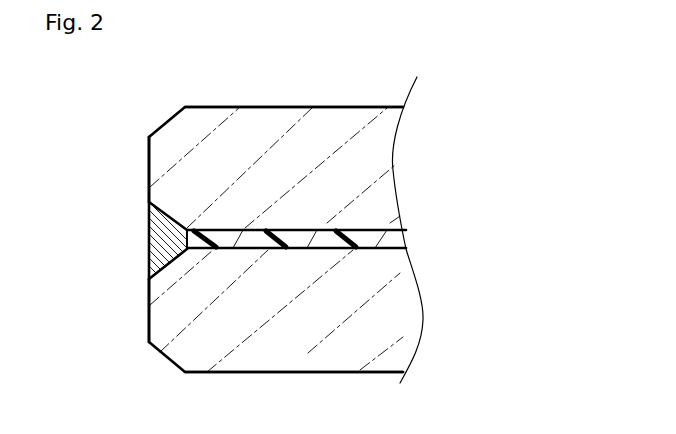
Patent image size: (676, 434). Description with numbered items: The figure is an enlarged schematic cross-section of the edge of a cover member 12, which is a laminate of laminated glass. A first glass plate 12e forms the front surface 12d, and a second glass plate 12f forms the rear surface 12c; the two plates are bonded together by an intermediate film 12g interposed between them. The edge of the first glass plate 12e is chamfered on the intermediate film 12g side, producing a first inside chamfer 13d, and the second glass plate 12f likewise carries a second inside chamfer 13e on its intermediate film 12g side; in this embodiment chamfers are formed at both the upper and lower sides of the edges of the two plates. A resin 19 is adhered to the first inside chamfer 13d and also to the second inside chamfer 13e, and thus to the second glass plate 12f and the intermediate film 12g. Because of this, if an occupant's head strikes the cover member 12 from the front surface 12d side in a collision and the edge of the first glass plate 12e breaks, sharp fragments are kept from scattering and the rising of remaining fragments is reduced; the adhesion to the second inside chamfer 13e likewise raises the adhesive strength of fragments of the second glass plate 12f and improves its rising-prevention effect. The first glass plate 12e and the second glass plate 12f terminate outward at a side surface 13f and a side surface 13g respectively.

The cover member 12 is at (412, 165).
The rear surface 12c is at (282, 372).
The front surface 12d is at (258, 107).
The first glass plate 12e is at (380, 185).
The second glass plate 12f is at (405, 288).
The intermediate film 12g is at (342, 248).
The first inside chamfer 13d is at (149, 220).
The second inside chamfer 13e is at (148, 257).
The side surface 13f is at (149, 167).
The side surface 13g is at (149, 302).
The resin 19 is at (150, 247).